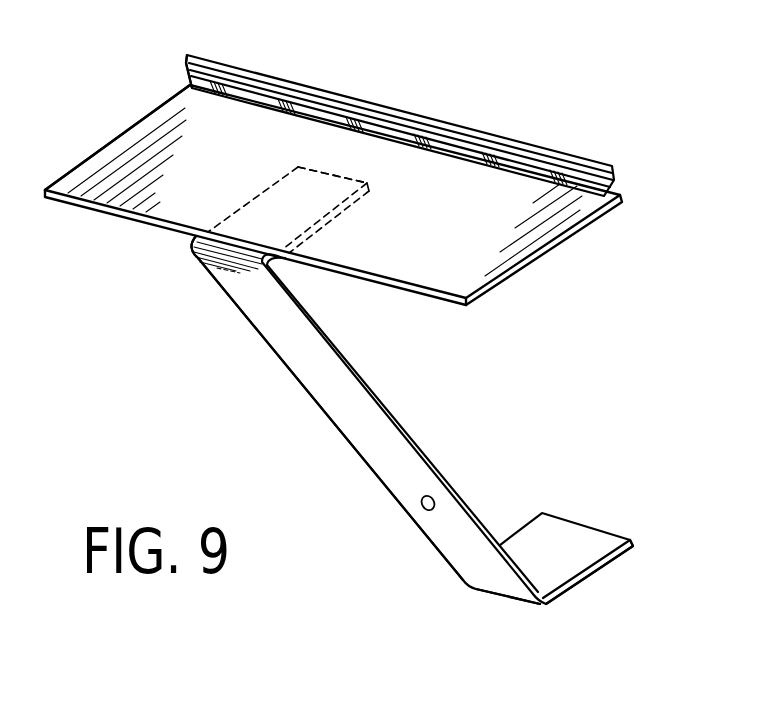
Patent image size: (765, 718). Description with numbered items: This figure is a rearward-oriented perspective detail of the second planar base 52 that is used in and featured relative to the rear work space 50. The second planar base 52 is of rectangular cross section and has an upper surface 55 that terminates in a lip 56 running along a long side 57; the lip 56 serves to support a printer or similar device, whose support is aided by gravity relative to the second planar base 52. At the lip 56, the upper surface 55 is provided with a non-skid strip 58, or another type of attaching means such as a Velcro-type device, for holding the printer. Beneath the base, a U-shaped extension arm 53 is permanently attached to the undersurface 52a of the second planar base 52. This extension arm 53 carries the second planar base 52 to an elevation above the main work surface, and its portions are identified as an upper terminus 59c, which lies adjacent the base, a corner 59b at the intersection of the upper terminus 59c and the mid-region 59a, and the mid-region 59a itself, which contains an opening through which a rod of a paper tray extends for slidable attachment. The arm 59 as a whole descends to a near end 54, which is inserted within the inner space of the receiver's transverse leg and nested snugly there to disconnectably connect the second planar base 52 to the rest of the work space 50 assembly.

The work space 50 is at (568, 108).
The second planar base 52 is at (577, 259).
The undersurface 52a is at (130, 223).
The U-shaped extension arm 53 is at (457, 482).
The near end 54 is at (578, 537).
The upper surface 55 is at (112, 172).
The lip 56 is at (250, 74).
The long side 57 is at (126, 131).
The non-skid strip 58 is at (190, 83).
The bracket 59 is at (437, 297).
The mid-region 59a is at (300, 360).
The corner 59b is at (200, 262).
The upper terminus 59c is at (315, 230).